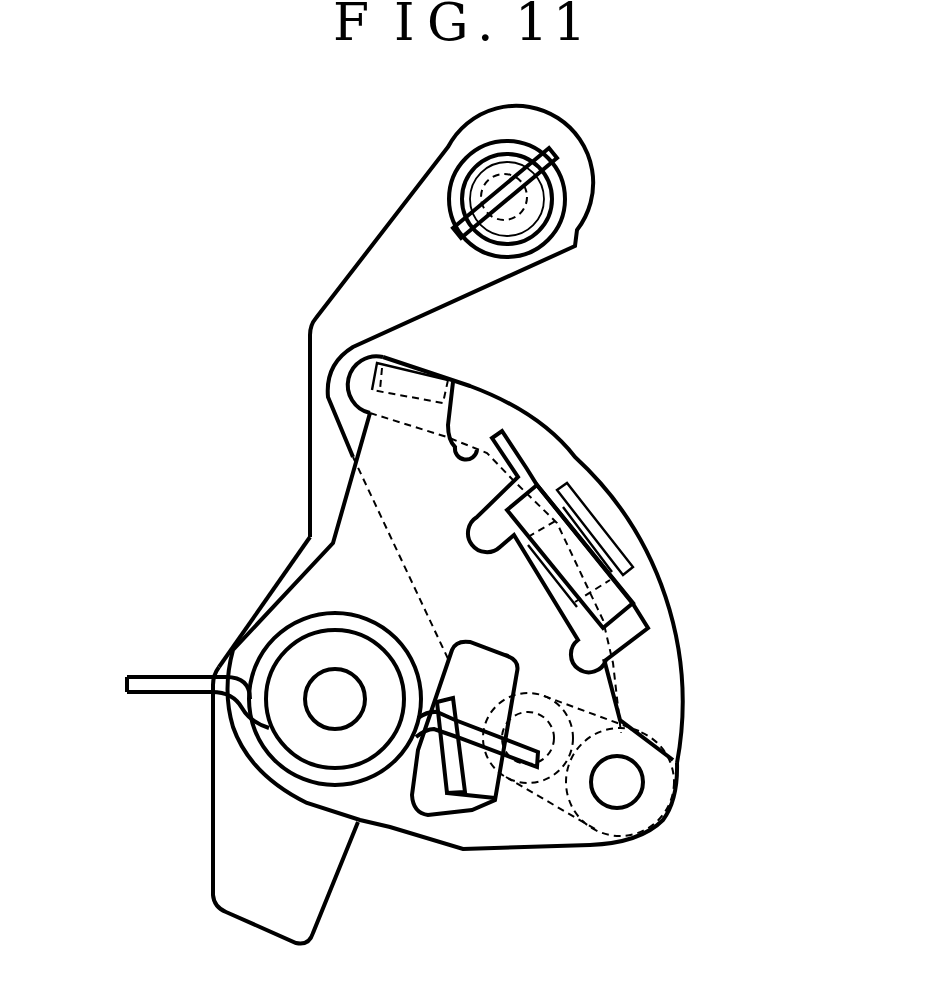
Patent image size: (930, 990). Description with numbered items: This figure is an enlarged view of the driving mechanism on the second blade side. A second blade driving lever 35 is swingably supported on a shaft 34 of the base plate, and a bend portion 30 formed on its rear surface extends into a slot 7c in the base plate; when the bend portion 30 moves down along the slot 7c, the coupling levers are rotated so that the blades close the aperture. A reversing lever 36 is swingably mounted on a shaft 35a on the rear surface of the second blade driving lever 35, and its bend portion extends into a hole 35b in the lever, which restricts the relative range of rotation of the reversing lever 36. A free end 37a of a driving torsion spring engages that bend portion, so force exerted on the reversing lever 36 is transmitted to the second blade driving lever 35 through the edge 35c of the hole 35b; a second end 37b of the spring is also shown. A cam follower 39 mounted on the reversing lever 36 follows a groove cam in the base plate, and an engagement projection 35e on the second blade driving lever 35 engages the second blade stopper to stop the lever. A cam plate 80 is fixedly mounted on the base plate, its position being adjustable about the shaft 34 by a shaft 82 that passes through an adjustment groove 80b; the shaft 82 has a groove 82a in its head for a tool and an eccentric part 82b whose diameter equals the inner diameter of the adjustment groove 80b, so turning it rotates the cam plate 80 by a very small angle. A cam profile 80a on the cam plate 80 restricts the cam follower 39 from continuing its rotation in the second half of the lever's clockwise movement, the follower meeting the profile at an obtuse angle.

The cam plate 80 is at (310, 362).
The cam profile 80a is at (350, 893).
The adjustment groove 80b is at (507, 232).
The shaft 82 is at (450, 192).
The groove for adjustment 82a is at (557, 150).
The eccentric part 82b is at (545, 190).
The bend portion 30 is at (463, 373).
The slot 7c is at (545, 418).
The second blade driving lever 35 is at (343, 502).
The shaft 35a is at (642, 787).
The hole 35b is at (478, 640).
The edge 35c is at (452, 806).
The engagement projection 35e is at (562, 452).
The shaft 34 is at (318, 722).
The reversing lever 36 is at (578, 708).
The free end 37a is at (165, 675).
The spring arm 37b is at (545, 757).
The cam follower 39 is at (520, 773).